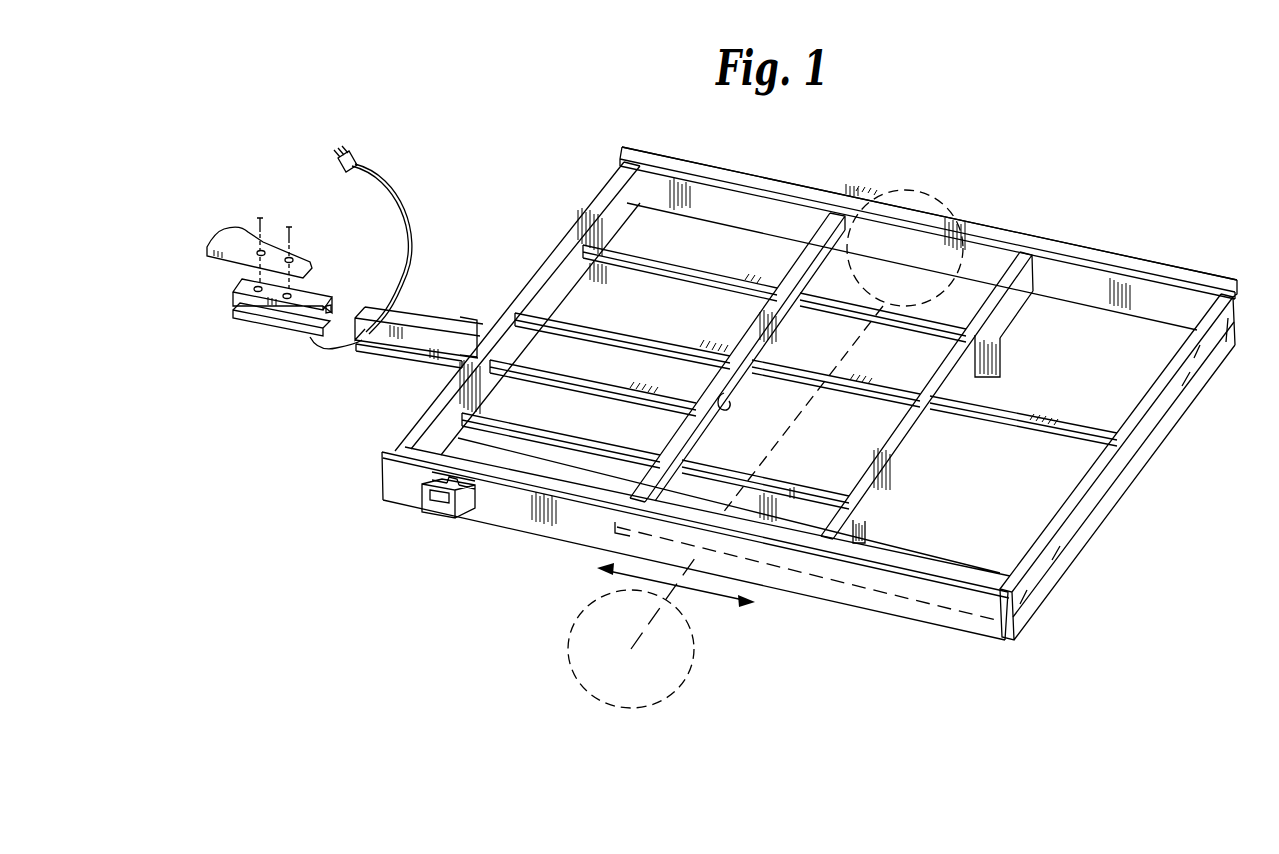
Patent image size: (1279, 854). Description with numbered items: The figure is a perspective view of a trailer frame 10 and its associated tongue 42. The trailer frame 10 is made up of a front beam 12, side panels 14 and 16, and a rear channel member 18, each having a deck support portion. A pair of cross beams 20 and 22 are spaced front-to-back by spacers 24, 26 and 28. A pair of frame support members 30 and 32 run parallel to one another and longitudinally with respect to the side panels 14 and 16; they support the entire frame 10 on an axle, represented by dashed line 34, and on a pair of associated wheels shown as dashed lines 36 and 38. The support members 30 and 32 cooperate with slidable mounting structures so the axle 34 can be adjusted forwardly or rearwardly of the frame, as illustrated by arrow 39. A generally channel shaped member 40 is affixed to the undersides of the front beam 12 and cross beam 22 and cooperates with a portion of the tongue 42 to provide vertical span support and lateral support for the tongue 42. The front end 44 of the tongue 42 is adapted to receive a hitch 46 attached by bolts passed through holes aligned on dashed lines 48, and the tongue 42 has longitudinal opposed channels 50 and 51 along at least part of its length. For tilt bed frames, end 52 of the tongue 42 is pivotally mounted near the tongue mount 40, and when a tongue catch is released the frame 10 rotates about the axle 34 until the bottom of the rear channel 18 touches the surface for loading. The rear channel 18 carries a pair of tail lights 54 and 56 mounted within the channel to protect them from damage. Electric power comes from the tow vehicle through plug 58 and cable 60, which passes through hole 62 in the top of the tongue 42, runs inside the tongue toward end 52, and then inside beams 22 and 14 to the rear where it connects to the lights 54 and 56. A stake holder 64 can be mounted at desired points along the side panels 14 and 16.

The trailer frame 10 is at (1068, 221).
The front beam 12 is at (598, 214).
The side panel 14 is at (486, 525).
The side panel 16 is at (814, 184).
The rear channel member 18 is at (1108, 503).
The cross beam 20 is at (1013, 305).
The cross beam 22 is at (808, 246).
The spacer 24 is at (613, 333).
The spacer 26 is at (867, 385).
The spacer 28 is at (1037, 423).
The frame support member 30 is at (787, 487).
The frame support member 32 is at (992, 356).
The axle 34 is at (813, 423).
The wheel 36 is at (940, 185).
The wheel 38 is at (690, 630).
The arrow 39 is at (597, 570).
The channel shaped member 40 is at (587, 356).
The tongue 42 is at (417, 315).
The front end 44 is at (240, 283).
The hitch 46 is at (228, 233).
The dashed lines 48 is at (290, 227).
The channel 50 is at (247, 318).
The channel 51 is at (327, 315).
The end 52 is at (733, 405).
The tail light 54 is at (1045, 570).
The tail light 56 is at (1207, 367).
The plug 58 is at (353, 158).
The cable 60 is at (827, 578).
The hole 62 is at (368, 348).
The stake holder 64 is at (423, 515).